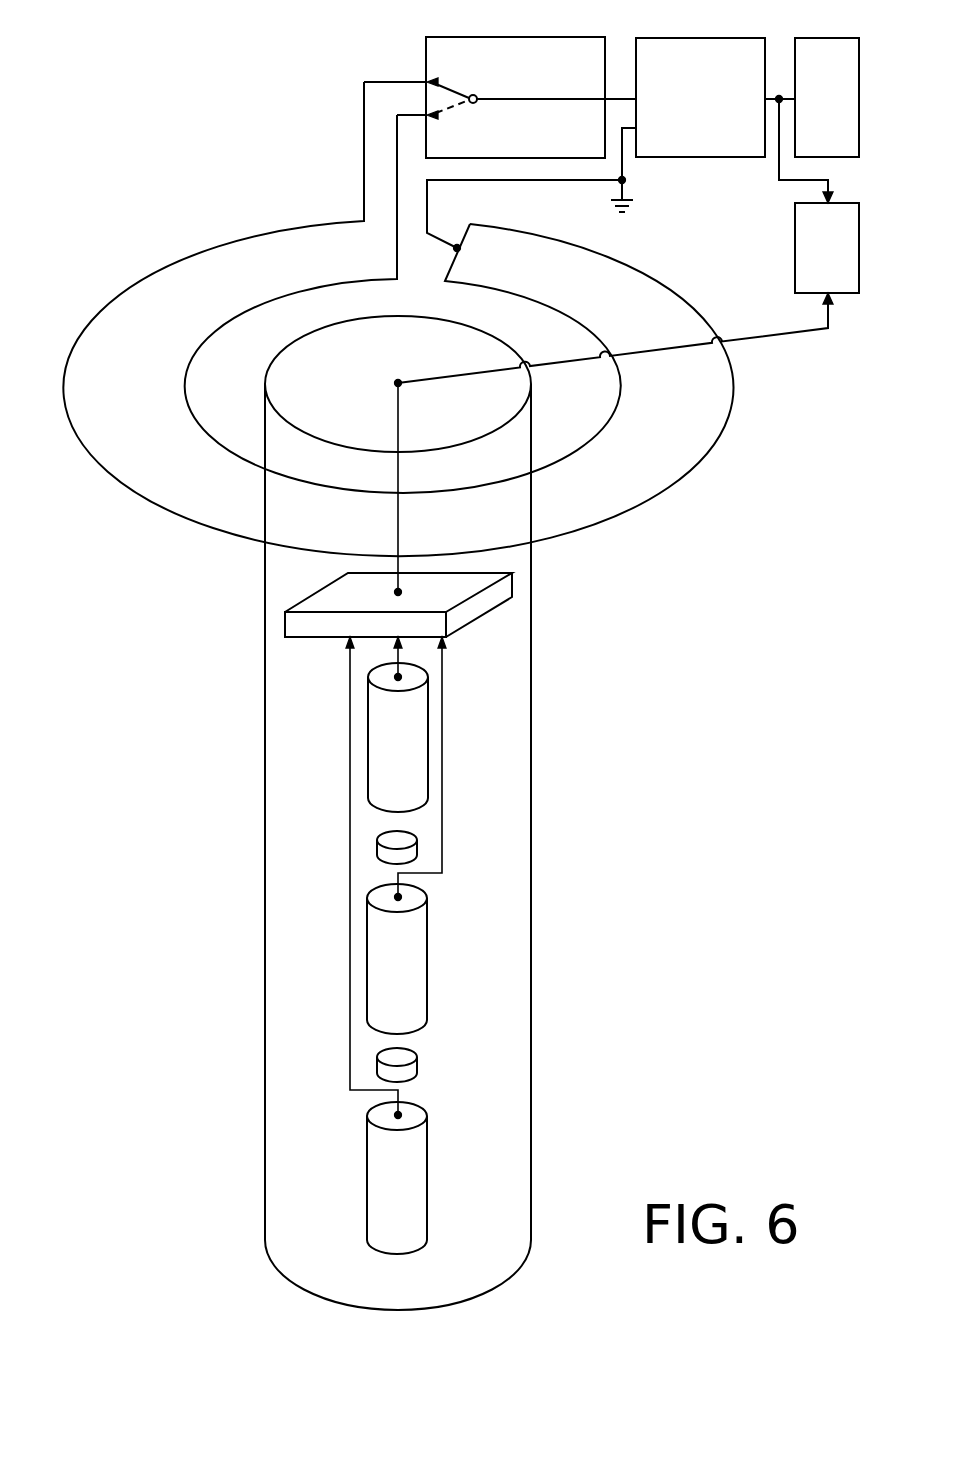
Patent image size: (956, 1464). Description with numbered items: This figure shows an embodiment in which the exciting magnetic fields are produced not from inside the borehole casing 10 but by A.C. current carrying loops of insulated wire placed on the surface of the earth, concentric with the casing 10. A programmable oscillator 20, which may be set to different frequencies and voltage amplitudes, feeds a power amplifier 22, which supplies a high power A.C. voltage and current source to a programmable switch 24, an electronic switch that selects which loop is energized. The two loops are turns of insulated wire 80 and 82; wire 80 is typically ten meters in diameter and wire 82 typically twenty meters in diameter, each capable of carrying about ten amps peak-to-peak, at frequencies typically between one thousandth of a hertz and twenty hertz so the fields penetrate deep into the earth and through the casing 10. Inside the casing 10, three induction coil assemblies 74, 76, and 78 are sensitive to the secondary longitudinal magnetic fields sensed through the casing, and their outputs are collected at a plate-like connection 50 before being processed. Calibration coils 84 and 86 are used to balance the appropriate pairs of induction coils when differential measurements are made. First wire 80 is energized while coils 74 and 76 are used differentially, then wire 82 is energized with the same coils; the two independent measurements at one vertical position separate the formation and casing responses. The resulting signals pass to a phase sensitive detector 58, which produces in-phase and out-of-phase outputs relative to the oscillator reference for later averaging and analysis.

The housing 10 is at (532, 693).
The programmable oscillator 20 is at (800, 36).
The power amplifier 22 is at (650, 36).
The programmable switch 24 is at (438, 35).
The sensor plate 50 is at (465, 627).
The phase sensitive detector 58 is at (795, 270).
The induction coil assembly 74 is at (365, 760).
The induction coil assembly 76 is at (365, 970).
The induction coil assembly 78 is at (363, 1207).
The turns of insulated wire 80 is at (605, 403).
The turns of insulated wire 82 is at (713, 433).
The calibration coil 84 is at (417, 845).
The calibration coil 86 is at (417, 1055).